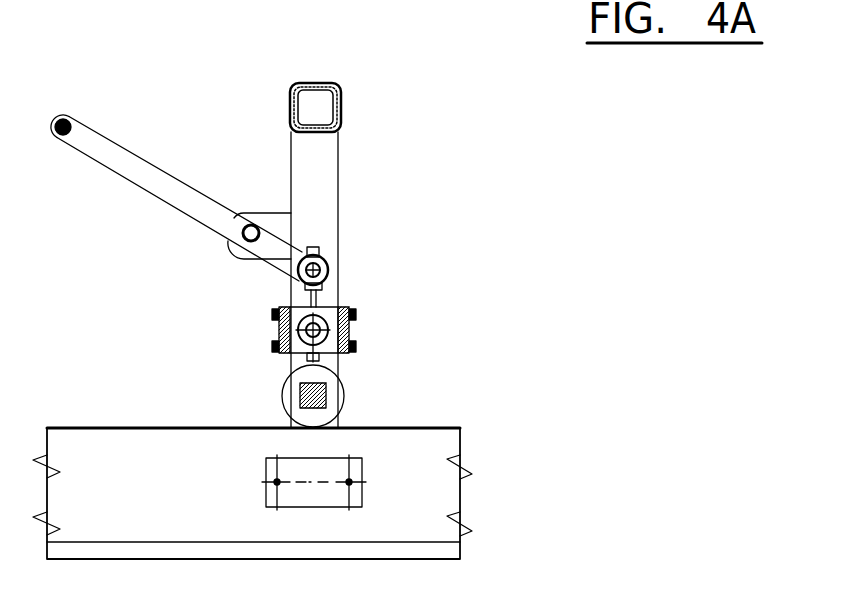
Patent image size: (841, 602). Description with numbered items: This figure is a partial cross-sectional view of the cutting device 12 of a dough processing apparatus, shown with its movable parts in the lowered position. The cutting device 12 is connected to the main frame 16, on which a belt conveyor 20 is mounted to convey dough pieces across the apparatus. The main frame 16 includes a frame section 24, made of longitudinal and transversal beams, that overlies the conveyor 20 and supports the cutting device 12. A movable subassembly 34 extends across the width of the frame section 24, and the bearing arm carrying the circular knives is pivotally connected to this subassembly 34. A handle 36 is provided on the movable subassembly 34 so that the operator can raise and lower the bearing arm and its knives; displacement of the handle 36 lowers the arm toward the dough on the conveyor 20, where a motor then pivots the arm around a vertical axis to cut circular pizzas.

The cutting device 12 is at (418, 88).
The frame section 24 is at (292, 85).
The handle 36 is at (130, 176).
The movable subassembly 34 is at (278, 332).
The belt conveyor 20 is at (430, 428).
The main frame 16 is at (455, 507).